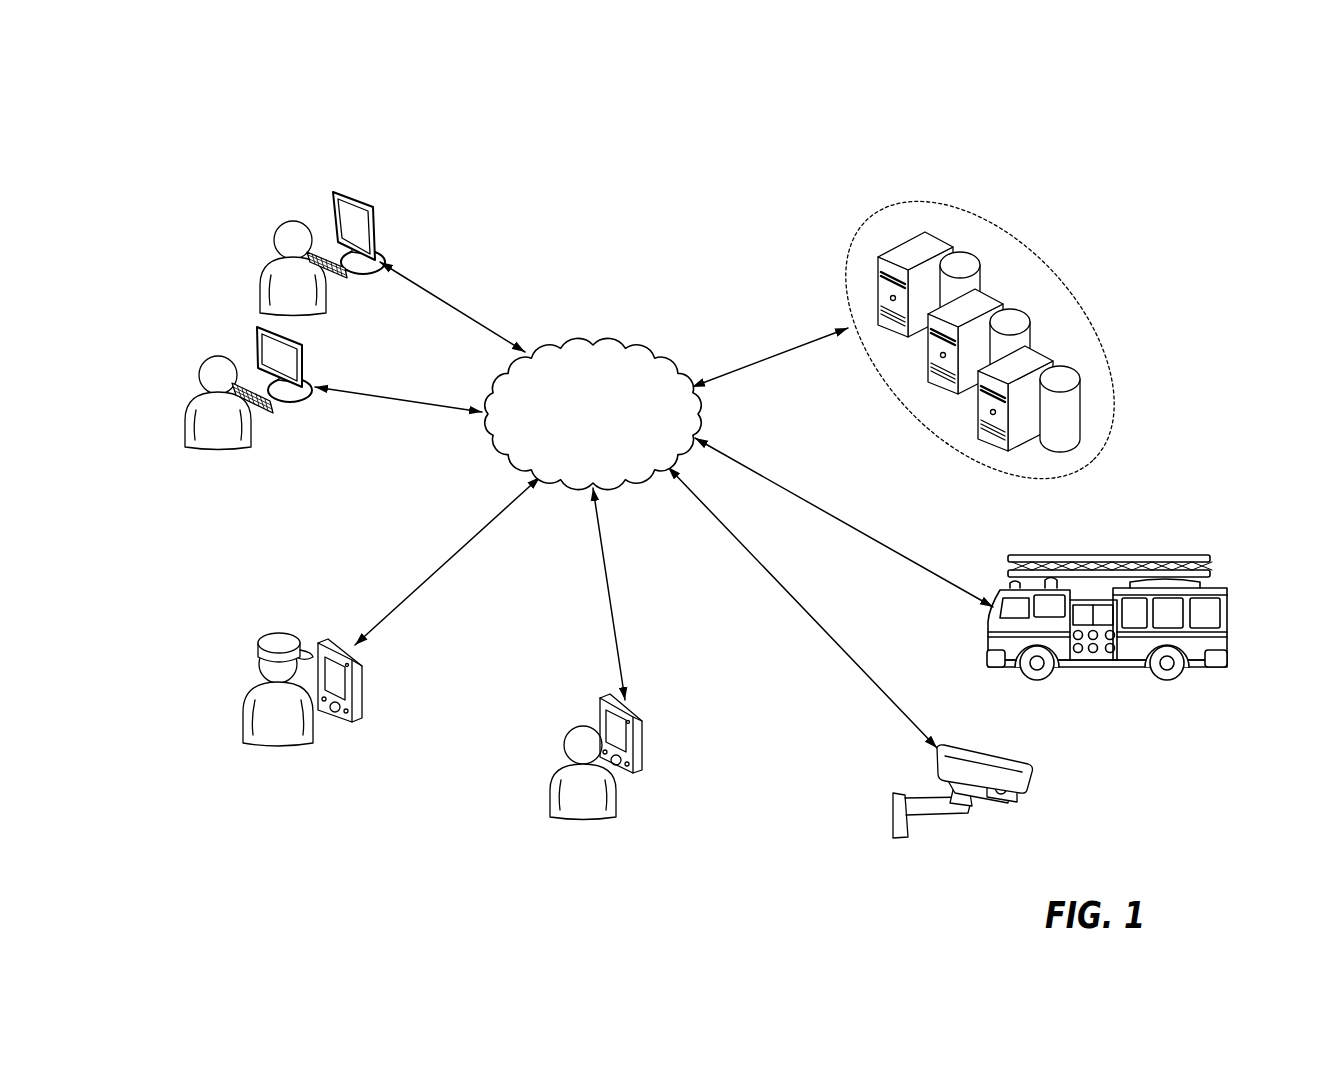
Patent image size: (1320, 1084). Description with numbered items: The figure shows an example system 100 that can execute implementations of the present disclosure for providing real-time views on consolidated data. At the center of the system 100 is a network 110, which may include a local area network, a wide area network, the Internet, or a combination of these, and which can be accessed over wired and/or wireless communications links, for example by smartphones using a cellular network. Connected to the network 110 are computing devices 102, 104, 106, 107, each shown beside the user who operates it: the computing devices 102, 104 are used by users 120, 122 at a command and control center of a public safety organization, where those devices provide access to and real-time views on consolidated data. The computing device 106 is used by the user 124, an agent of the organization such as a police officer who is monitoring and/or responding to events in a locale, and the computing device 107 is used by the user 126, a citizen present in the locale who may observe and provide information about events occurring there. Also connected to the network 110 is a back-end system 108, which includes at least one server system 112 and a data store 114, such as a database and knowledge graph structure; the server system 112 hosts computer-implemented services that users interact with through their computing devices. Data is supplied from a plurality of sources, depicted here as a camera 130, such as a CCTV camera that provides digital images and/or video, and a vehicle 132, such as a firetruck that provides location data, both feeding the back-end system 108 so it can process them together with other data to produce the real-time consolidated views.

The system 100 is at (880, 109).
The computing device 102 is at (380, 230).
The computing device 104 is at (303, 362).
The computing device 106 is at (362, 687).
The computing device 107 is at (643, 743).
The back-end system 108 is at (979, 340).
The network 110 is at (590, 347).
The server system 112 is at (905, 240).
The data store 114 is at (960, 252).
The user 120 is at (285, 222).
The user 122 is at (213, 355).
The user 124 is at (247, 697).
The user 126 is at (553, 770).
The camera 130 is at (1030, 780).
The vehicle 132 is at (1190, 555).